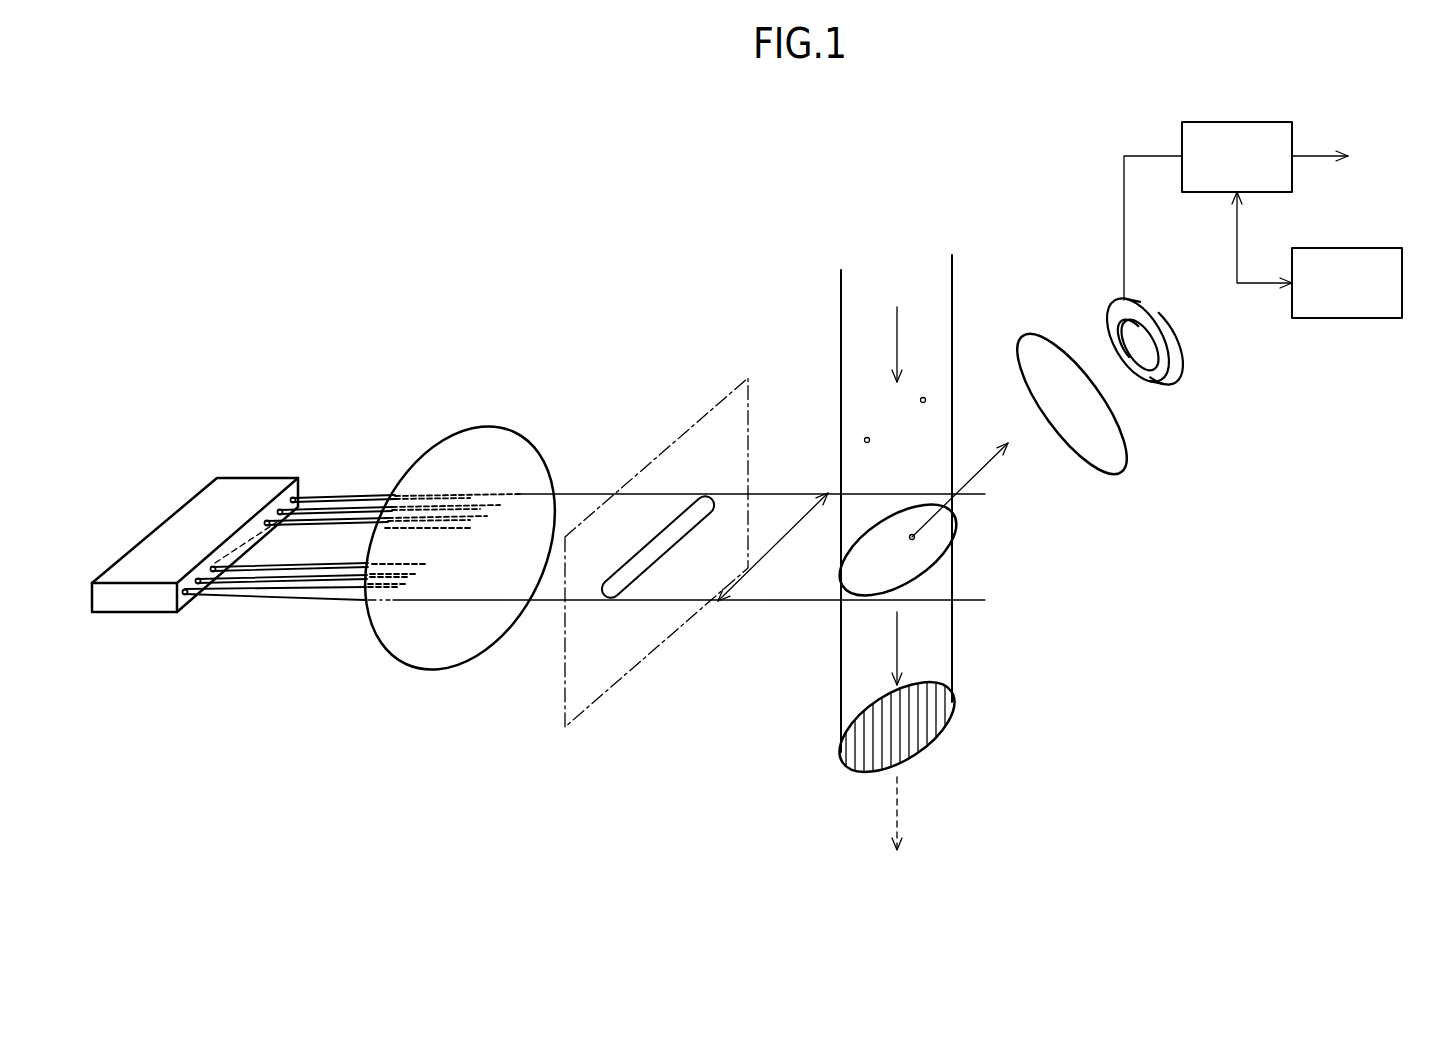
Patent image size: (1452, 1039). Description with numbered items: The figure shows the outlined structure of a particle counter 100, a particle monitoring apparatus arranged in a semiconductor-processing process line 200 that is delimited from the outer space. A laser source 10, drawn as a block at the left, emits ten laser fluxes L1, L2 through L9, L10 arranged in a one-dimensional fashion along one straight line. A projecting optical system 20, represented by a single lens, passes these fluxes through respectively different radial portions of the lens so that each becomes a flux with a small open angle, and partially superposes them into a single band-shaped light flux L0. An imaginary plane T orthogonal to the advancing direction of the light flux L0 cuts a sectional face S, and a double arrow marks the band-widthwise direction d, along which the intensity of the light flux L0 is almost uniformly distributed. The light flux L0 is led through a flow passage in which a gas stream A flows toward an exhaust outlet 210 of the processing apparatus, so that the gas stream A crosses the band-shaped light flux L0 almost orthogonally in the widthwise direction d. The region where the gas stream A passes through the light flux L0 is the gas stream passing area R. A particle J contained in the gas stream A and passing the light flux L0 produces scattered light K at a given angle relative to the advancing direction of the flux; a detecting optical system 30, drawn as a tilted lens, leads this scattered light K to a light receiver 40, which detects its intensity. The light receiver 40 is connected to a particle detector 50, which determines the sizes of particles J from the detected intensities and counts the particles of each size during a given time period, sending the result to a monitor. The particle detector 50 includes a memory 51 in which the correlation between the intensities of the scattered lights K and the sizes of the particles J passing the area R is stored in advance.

The particle counter 100 is at (579, 188).
The laser source 10 is at (232, 478).
The laser flux L1 is at (362, 497).
The laser flux L2 is at (322, 508).
The laser flux L9 is at (283, 583).
The laser flux L10 is at (228, 596).
The projecting optical system 20 is at (488, 424).
The band-shaped light flux L0 is at (762, 590).
The imaginary plane T is at (713, 407).
The sectional face S is at (630, 580).
The band-widthwise direction d is at (773, 547).
The gas stream A is at (848, 300).
The exhaust outlet 210 is at (937, 722).
The gas stream passing area R is at (840, 580).
The particle J is at (864, 440).
The scattered light K is at (982, 473).
The detecting optical system 30 is at (1038, 347).
The light receiver 40 is at (1168, 388).
The particle detector 50 is at (1229, 125).
The memory 51 is at (1348, 318).
The semiconductor-processing process line 200 is at (497, 828).